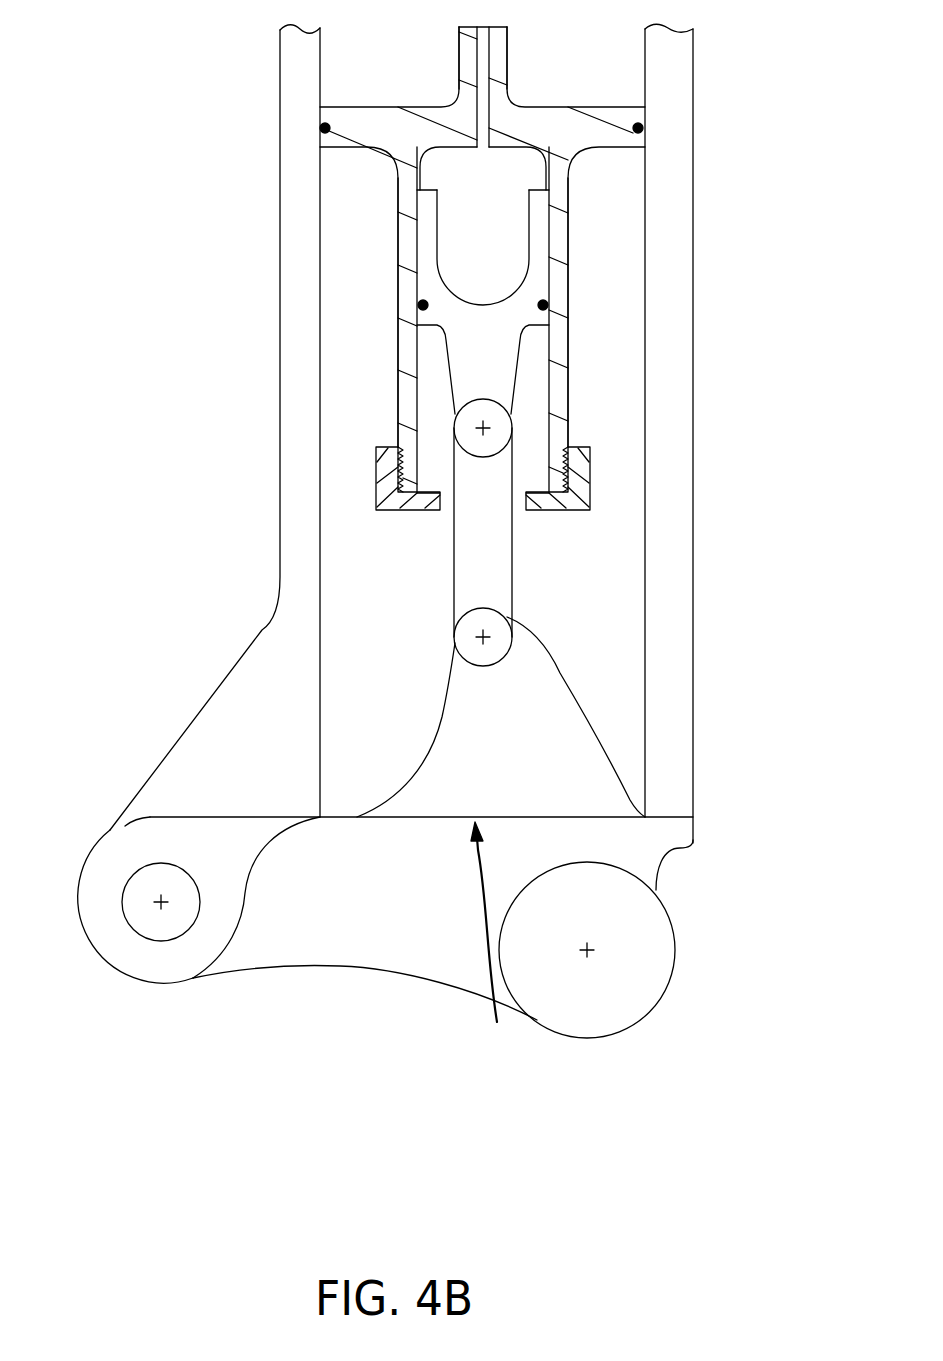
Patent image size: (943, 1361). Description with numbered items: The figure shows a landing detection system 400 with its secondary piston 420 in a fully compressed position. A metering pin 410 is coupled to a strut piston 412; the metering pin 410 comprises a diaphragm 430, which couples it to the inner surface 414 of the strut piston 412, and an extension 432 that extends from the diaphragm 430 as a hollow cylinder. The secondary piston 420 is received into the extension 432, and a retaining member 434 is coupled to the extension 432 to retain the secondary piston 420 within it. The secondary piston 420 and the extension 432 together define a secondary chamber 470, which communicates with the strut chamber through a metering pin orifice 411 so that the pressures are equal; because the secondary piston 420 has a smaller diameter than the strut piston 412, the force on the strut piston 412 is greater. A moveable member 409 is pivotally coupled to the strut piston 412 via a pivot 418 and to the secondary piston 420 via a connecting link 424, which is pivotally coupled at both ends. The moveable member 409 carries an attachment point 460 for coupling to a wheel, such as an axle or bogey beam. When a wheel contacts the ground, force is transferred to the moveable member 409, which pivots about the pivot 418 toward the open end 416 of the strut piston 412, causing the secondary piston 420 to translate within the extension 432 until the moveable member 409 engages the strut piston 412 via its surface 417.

The landing detection system 400 is at (739, 133).
The moveable member 409 is at (425, 934).
The metering pin 410 is at (503, 48).
The metering pin orifice 411 is at (476, 42).
The strut piston 412 is at (280, 177).
The inner surface 414 is at (320, 625).
The open end 416 is at (494, 938).
The surface 417 is at (675, 814).
The pivot 418 is at (128, 878).
The secondary piston 420 is at (538, 240).
The connecting link 424 is at (498, 577).
The diaphragm 430 is at (384, 120).
The extension 432 is at (398, 262).
The retaining member 434 is at (387, 510).
The attachment point 460 is at (593, 952).
The secondary chamber 470 is at (503, 236).